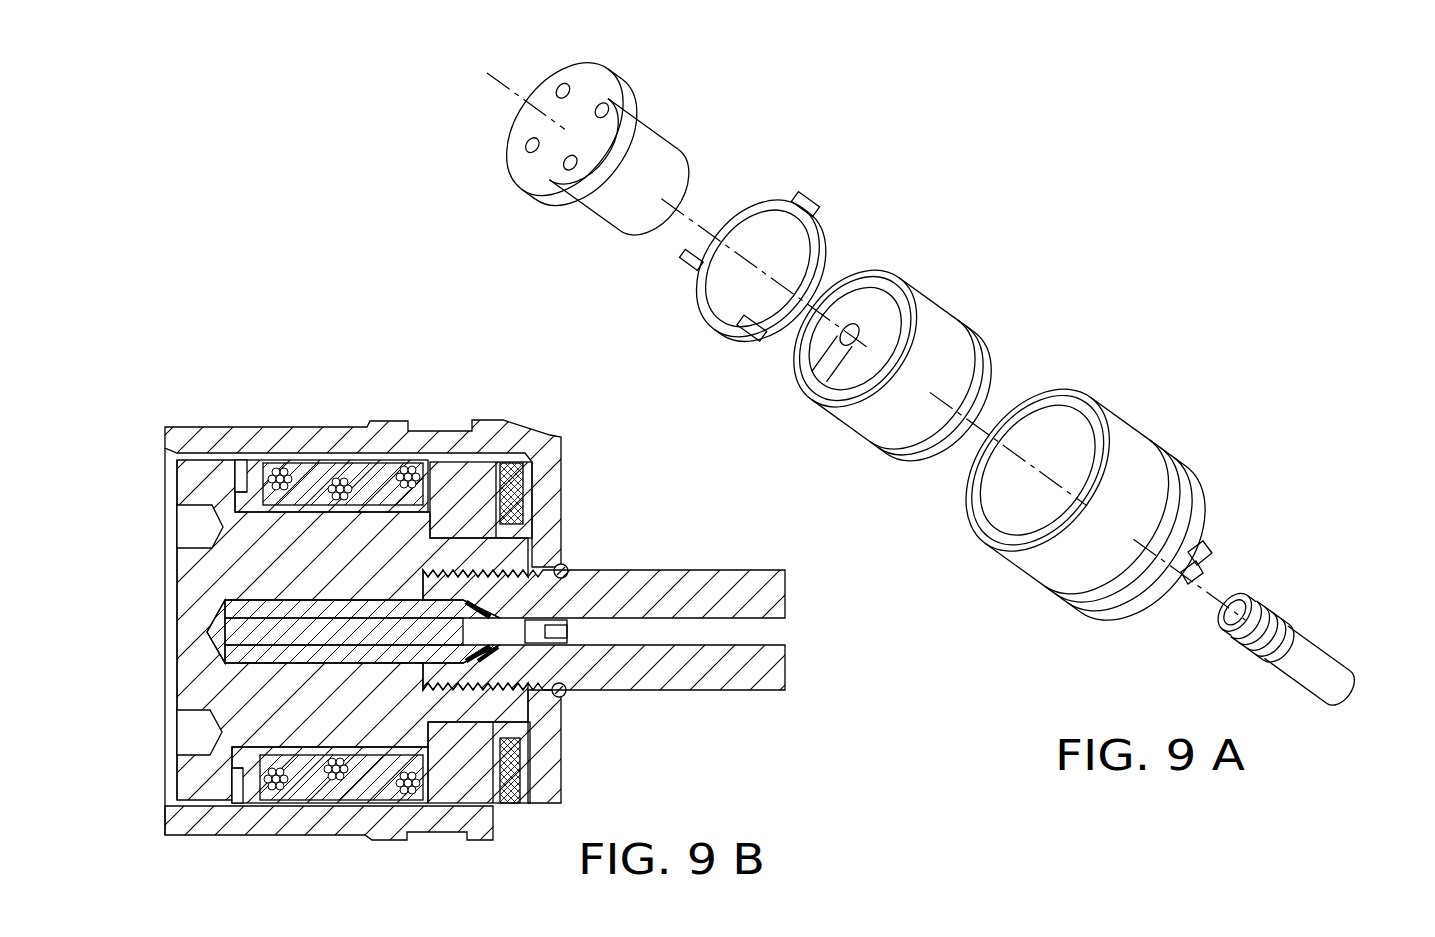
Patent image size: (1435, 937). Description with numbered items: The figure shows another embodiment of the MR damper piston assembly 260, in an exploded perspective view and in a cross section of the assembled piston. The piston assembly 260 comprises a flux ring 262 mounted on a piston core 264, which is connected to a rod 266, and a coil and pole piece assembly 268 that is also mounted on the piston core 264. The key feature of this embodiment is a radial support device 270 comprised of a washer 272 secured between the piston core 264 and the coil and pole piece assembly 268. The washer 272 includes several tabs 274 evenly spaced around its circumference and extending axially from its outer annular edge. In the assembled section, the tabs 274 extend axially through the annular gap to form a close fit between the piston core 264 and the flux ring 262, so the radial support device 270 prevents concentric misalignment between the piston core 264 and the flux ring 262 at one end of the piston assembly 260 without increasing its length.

In FIG. 9B, the piston assembly 260 is at (388, 408).
In FIG. 9B, the flux ring 262 is at (486, 430).
In FIG. 9A, the flux ring 262 is at (1128, 438).
In FIG. 9B, the piston core 264 is at (218, 573).
In FIG. 9A, the piston core 264 is at (648, 140).
In FIG. 9B, the rod 266 is at (688, 578).
In FIG. 9A, the rod 266 is at (1305, 637).
In FIG. 9B, the coil and pole piece assembly 268 is at (438, 476).
In FIG. 9A, the coil and pole piece assembly 268 is at (944, 299).
In FIG. 9B, the radial support device 270 is at (183, 815).
In FIG. 9A, the radial support device 270 is at (830, 235).
In FIG. 9B, the washer 272 is at (242, 462).
In FIG. 9A, the washer 272 is at (751, 217).
In FIG. 9B, the tabs 274 is at (220, 805).
In FIG. 9A, the tabs 274 is at (795, 203).